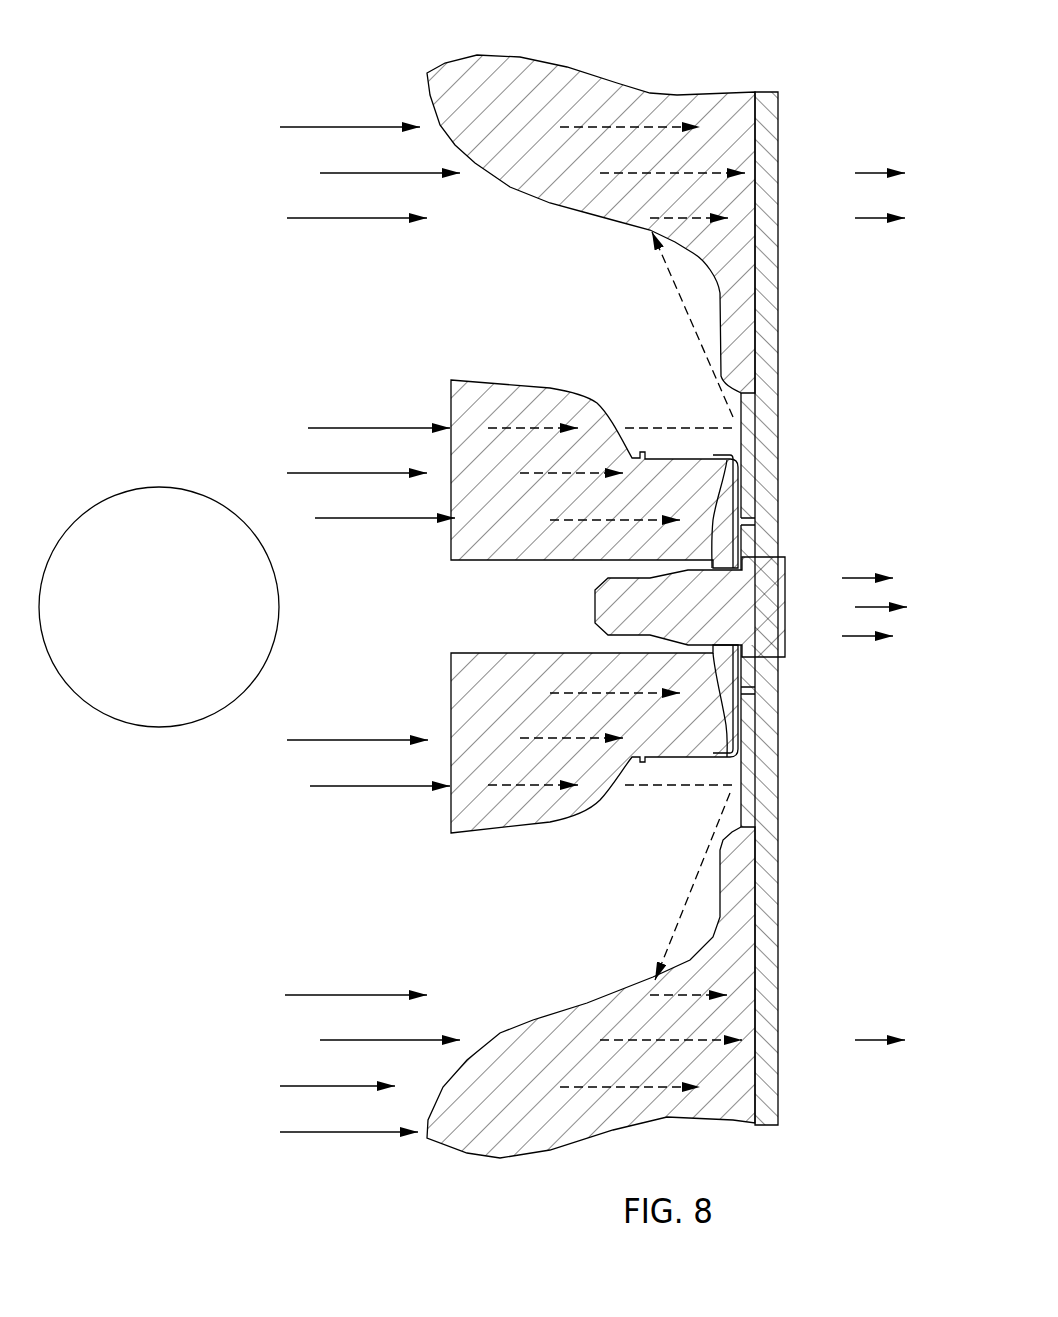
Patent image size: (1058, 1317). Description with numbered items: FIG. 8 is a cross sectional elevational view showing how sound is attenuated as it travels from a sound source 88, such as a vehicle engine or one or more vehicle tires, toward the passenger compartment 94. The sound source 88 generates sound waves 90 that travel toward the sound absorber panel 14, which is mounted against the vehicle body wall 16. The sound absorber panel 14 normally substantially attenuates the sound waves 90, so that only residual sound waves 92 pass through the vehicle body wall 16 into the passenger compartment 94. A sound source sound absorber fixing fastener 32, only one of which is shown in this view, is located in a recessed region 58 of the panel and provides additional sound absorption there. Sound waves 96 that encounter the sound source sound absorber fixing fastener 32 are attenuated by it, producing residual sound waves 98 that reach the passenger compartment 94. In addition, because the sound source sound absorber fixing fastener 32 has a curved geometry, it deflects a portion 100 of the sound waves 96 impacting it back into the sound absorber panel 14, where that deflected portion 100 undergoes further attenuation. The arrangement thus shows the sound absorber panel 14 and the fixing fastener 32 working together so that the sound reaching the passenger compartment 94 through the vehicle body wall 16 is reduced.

The sound absorber panel 14 is at (502, 75).
The vehicle body wall 16 is at (778, 270).
The sound source sound absorber fixing fastener 32 is at (480, 802).
The annular flow passage 58 is at (519, 256).
The sound source 88 is at (147, 520).
The sound waves 90 is at (322, 173).
The residual sound waves 92 is at (862, 173).
The passenger compartment 94 is at (846, 128).
The sound waves 96 is at (333, 518).
The residual sound waves 98 is at (858, 636).
The portion of the sound waves 100 is at (741, 412).